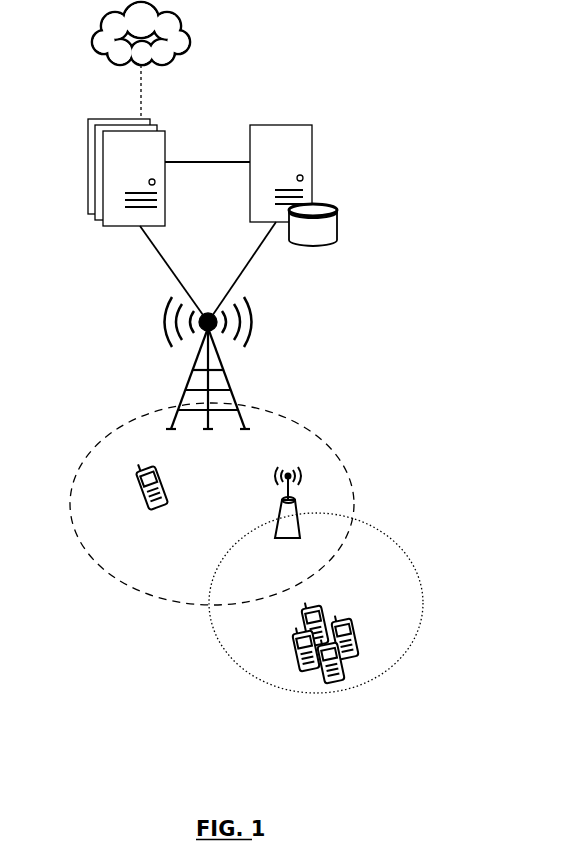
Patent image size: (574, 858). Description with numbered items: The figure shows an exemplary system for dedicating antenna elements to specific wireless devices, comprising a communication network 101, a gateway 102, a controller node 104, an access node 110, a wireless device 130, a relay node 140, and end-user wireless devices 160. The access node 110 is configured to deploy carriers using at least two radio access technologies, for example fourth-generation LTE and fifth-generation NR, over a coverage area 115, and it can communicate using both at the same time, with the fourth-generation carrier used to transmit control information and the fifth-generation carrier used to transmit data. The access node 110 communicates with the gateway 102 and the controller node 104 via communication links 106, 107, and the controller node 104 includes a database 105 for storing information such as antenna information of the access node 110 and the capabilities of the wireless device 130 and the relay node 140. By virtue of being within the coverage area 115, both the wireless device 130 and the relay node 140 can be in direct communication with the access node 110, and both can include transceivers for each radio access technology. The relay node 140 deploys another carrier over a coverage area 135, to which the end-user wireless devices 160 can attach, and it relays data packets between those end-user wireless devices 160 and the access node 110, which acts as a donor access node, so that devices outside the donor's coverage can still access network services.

The communication network 101 is at (158, 46).
The gateway 102 is at (105, 117).
The controller node 104 is at (312, 125).
The database 105 is at (334, 206).
The communication link 106 is at (250, 259).
The communication link 107 is at (155, 249).
The access node 110 is at (194, 384).
The coverage area 115 is at (120, 584).
The wireless device 130 is at (142, 484).
The coverage area 135 is at (392, 541).
The relay node 140 is at (297, 504).
The end-user wireless devices 160 is at (363, 609).